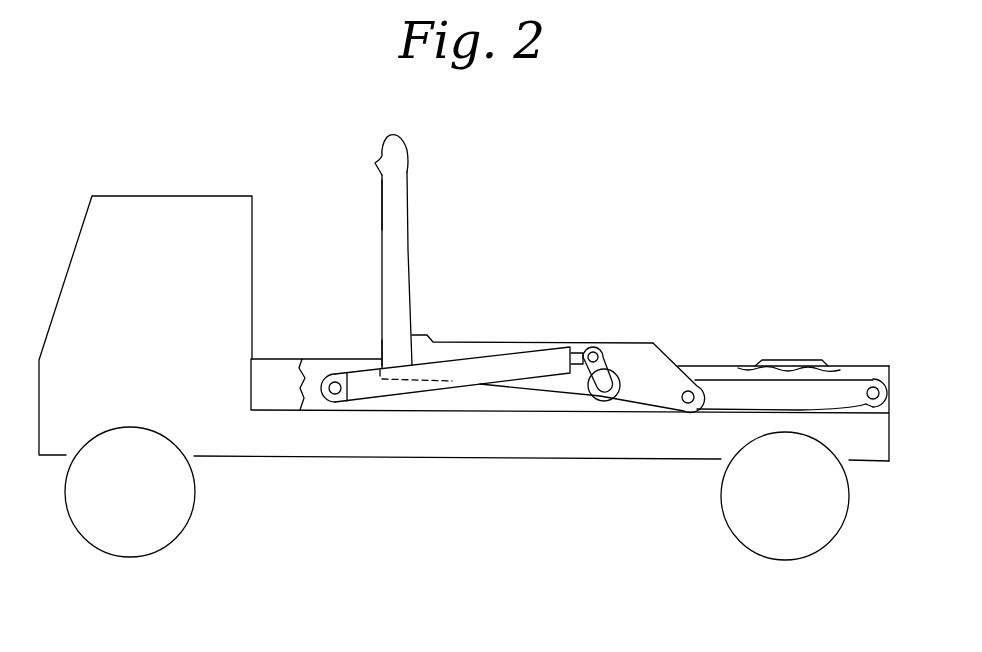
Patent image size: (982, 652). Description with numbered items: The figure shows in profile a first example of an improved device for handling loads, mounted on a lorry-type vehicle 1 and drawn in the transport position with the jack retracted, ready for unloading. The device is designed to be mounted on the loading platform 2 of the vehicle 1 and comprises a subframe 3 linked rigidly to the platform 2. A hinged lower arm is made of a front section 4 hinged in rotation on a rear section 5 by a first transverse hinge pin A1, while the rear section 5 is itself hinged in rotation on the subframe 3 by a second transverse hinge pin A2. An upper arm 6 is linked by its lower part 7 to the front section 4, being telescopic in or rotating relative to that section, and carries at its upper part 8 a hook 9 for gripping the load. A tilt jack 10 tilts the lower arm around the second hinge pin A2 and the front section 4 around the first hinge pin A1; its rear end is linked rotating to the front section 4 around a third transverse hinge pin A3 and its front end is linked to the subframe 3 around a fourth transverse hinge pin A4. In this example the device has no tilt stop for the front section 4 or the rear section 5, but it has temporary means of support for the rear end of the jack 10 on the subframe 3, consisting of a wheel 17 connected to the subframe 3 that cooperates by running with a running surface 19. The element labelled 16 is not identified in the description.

The vehicle 1 is at (187, 207).
The loading platform 2 is at (256, 438).
The subframe 3 is at (272, 363).
The front section 4 is at (447, 352).
The rear section 5 is at (856, 388).
The upper arm 6 is at (405, 250).
The lower part 7 is at (380, 352).
The upper part 8 is at (382, 175).
The hook 9 is at (395, 140).
The jack 10 is at (370, 400).
The lock member 16 is at (773, 365).
The wheel 17 is at (612, 366).
The running surface 19 is at (815, 362).
The first hinge pin A1 is at (688, 404).
The second hinge pin A2 is at (873, 400).
The third hinge pin A3 is at (588, 354).
The fourth hinge pin A4 is at (333, 400).